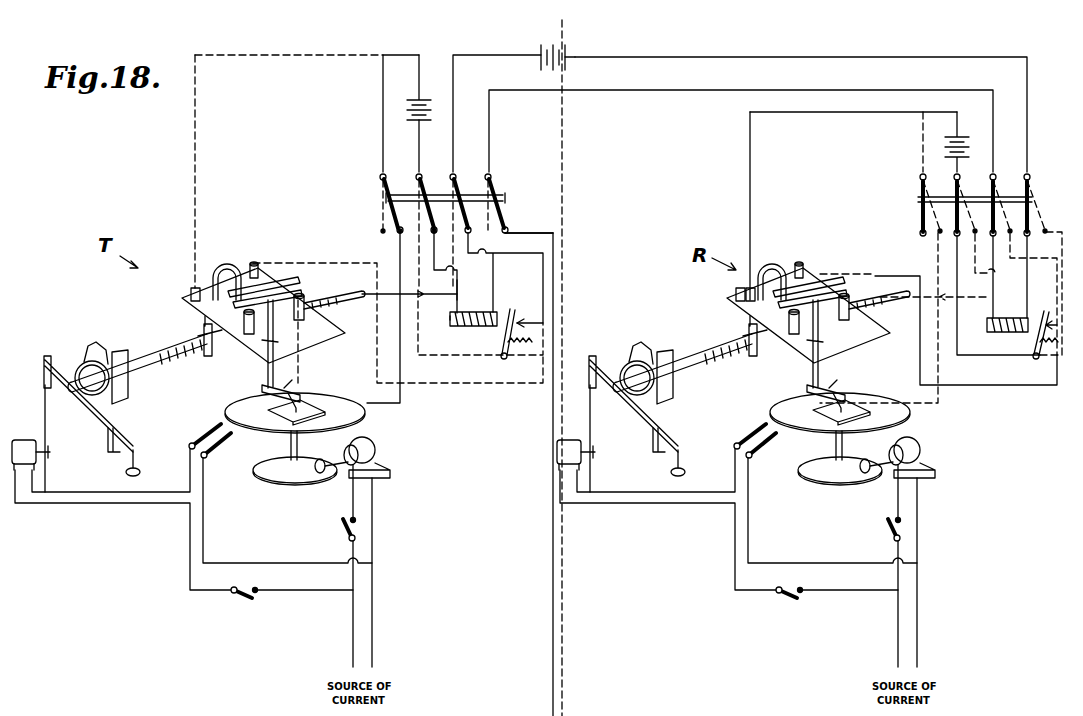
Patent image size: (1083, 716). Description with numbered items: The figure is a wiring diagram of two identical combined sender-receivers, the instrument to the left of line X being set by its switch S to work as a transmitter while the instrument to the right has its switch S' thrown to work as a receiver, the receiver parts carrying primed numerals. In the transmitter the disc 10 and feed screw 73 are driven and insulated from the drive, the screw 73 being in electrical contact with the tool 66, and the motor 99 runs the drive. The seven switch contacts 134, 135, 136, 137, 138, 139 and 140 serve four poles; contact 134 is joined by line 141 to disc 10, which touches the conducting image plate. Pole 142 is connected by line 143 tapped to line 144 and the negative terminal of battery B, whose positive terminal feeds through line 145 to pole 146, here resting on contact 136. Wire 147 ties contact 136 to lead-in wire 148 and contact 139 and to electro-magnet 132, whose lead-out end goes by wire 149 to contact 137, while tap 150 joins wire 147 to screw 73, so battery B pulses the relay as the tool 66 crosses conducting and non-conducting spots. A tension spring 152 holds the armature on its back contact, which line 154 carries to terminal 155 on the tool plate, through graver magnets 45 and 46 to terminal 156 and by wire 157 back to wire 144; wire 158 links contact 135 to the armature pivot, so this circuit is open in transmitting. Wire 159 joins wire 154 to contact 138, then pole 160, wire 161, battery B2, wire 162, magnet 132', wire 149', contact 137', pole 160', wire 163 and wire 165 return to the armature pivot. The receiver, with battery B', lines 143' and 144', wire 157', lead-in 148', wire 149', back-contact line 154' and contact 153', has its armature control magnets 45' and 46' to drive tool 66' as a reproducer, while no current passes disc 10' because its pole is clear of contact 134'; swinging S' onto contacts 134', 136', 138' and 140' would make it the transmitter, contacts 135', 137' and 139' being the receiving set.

The rotating disc 10 is at (273, 407).
The rotating disc 10' is at (840, 405).
The electro-magnet 45 is at (186, 330).
The electro-magnet 45' is at (730, 336).
The electro-magnet 46 is at (296, 298).
The electro-magnet 46' is at (841, 298).
The tool 66 is at (270, 403).
The tool 66' is at (851, 398).
The feed screw 73 is at (166, 354).
The motor 99 is at (33, 442).
The electro-magnet 132 is at (489, 308).
The electro-magnet 132' is at (998, 336).
The contact 134 is at (362, 219).
The contact 134' is at (909, 235).
The contact 135 is at (373, 237).
The contact 135' is at (912, 247).
The contact 136 is at (399, 245).
The contact 136' is at (1009, 293).
The contact 137 is at (464, 199).
The contact 137' is at (976, 199).
The contact 138 is at (455, 273).
The contact 138' is at (1016, 294).
The contact 139 is at (465, 207).
The contact 139' is at (1051, 244).
The contact 140 is at (529, 223).
The contact 140' is at (998, 200).
The line 141 is at (402, 398).
The switch pole 142 is at (364, 204).
The line 143 is at (378, 113).
The line 143' is at (897, 142).
The line 144 is at (289, 42).
The line 144' is at (853, 123).
The line 145 is at (419, 142).
The pole 146 is at (414, 165).
The wire 147 is at (474, 288).
The lead-in wire 148 is at (505, 280).
The lead-in wire 148' is at (1011, 277).
The wire 149 is at (442, 333).
The wire 149' is at (975, 309).
The tap 150 is at (434, 292).
The tension spring 152 is at (518, 350).
The contact 153' is at (1044, 307).
The line 154 is at (398, 323).
The line 154' is at (919, 320).
The terminal 155 is at (254, 263).
The terminal 156 is at (191, 286).
The wire 157 is at (172, 171).
The wire 157' is at (730, 206).
The wire 158 is at (423, 357).
The wire 159 is at (529, 243).
The switch pole 160 is at (440, 163).
The switch pole 160' is at (1010, 192).
The wire 161 is at (492, 40).
The wire 162 is at (732, 50).
The wire 163 is at (648, 80).
The wire 165 is at (553, 243).
The battery B is at (411, 87).
The battery B' is at (963, 142).
The battery B2 is at (584, 46).
The line X— X is at (551, 45).
The switch S is at (463, 164).
The switch S' is at (1038, 191).